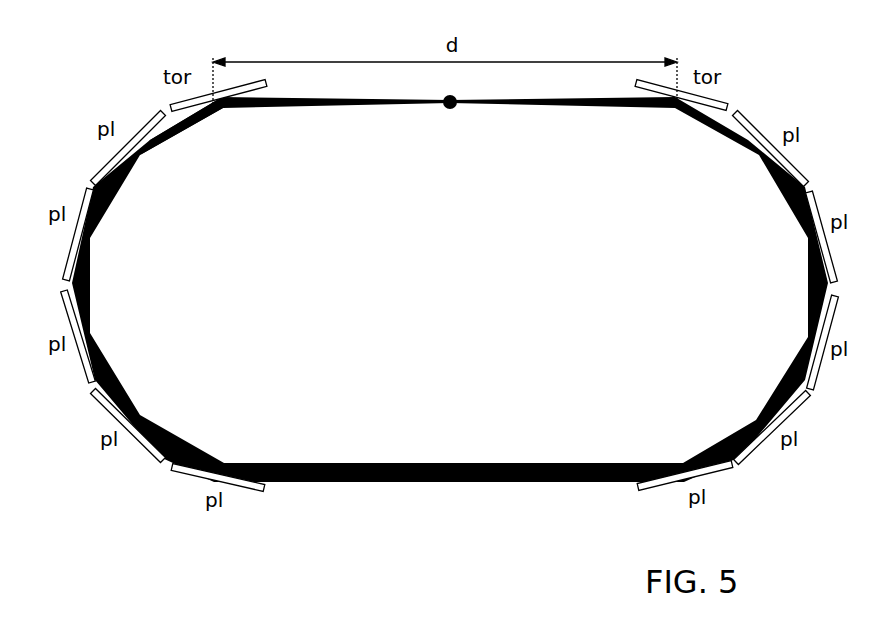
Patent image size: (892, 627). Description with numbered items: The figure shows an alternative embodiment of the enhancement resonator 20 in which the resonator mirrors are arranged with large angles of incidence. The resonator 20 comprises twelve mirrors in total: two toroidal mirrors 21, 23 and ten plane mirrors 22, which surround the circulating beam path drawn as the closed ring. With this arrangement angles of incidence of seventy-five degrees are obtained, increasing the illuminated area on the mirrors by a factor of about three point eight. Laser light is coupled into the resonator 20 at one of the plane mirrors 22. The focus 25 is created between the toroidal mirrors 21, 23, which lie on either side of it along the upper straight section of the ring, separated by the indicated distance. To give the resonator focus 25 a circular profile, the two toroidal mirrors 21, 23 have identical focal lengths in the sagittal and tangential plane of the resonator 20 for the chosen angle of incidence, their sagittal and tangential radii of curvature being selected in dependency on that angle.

The enhancement resonator 20 is at (439, 306).
The toroidal mirror 21 is at (172, 107).
The plane mirror 22 is at (143, 157).
The toroidal mirror 23 is at (715, 108).
The focus 25 is at (456, 107).